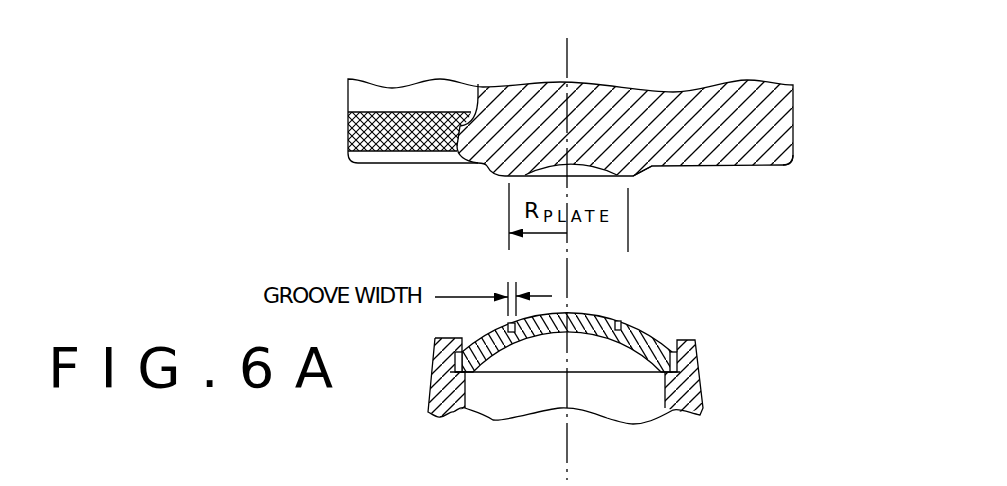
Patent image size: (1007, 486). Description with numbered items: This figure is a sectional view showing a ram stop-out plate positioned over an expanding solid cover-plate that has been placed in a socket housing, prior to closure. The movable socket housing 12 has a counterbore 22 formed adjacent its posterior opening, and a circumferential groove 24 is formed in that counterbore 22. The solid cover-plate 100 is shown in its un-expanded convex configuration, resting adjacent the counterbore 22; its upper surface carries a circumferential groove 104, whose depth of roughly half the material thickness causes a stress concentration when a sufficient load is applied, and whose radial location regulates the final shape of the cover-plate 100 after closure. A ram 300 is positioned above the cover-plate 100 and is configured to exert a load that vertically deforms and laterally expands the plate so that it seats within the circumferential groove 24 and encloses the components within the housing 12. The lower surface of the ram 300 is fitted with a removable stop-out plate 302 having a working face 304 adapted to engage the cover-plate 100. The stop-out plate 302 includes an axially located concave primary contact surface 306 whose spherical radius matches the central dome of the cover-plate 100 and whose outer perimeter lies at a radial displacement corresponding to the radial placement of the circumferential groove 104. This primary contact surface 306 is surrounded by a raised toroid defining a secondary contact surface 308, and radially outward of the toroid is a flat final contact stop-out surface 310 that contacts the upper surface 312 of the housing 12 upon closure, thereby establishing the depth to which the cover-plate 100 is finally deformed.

The ram 300 is at (692, 64).
The removable stop-out plate 302 is at (795, 130).
The working face 304 is at (335, 152).
The concave primary contact surface 306 is at (553, 169).
The secondary contact surface 308 is at (640, 177).
The flat final contact stop-out surface 310 is at (765, 168).
The solid cover-plate 100 is at (608, 310).
The circumferential groove 104 is at (616, 326).
The upper surface of the housing 312 is at (695, 336).
The circumferential groove 24 is at (694, 355).
The socket housing 12 is at (703, 396).
The counterbore 22 is at (538, 372).